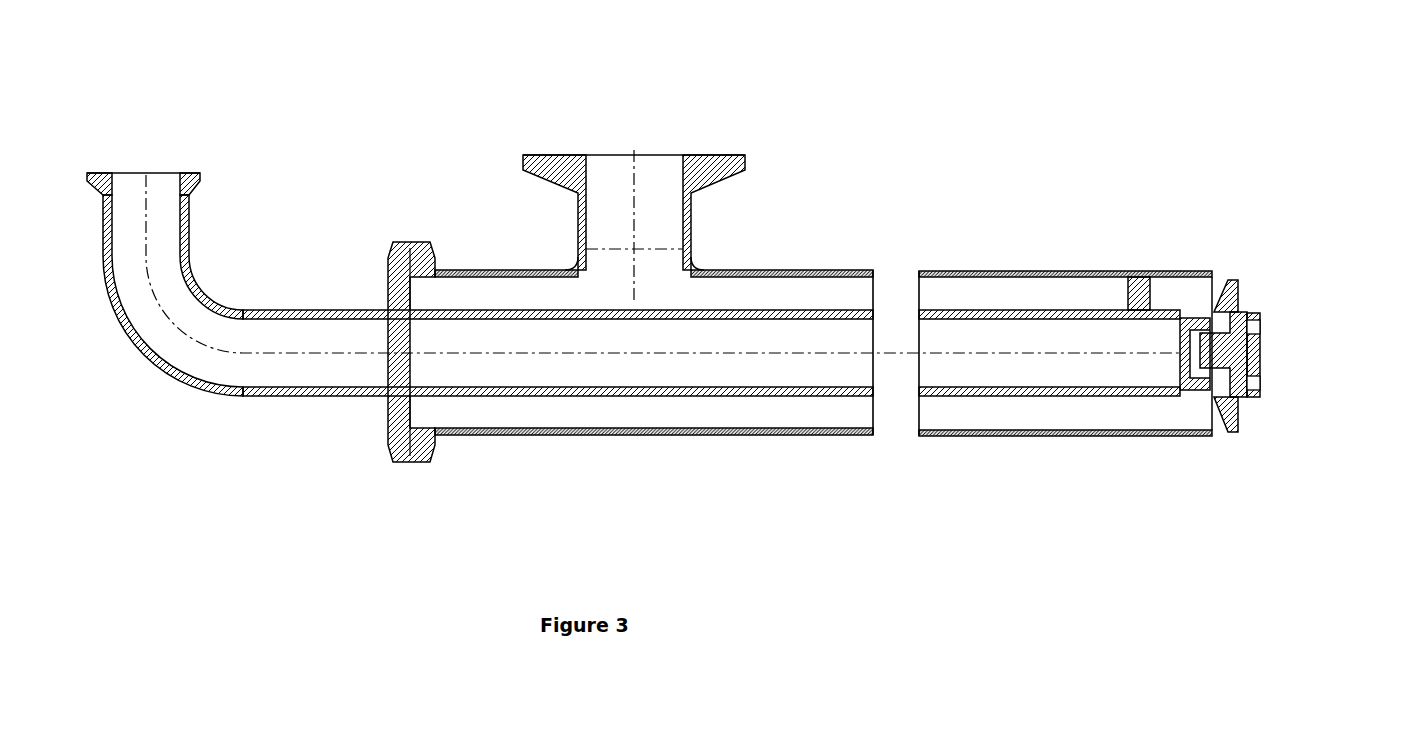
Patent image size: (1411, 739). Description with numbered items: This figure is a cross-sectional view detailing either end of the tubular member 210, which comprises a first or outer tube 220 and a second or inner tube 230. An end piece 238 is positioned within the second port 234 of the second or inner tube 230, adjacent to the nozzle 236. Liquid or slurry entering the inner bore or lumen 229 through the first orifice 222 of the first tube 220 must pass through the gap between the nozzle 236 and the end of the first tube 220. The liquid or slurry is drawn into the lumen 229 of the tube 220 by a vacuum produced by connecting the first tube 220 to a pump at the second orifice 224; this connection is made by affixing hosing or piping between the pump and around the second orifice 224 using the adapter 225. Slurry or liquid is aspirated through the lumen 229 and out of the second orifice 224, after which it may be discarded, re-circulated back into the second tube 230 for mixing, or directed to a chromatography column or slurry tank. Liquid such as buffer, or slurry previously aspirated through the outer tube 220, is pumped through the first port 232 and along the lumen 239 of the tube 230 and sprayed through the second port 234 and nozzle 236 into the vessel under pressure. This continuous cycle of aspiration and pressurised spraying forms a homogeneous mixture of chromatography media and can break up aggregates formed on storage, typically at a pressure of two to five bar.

The tubular member 210 is at (797, 453).
The first or outer tube 220 is at (820, 252).
The first orifice 222 is at (1213, 290).
The second orifice 224 is at (640, 165).
The adapter 225 is at (556, 155).
The lumen 229 is at (935, 292).
The second or inner tube 230 is at (196, 227).
The first port 232 is at (131, 182).
The second port 234 is at (1168, 378).
The nozzle 236 is at (1232, 280).
The end piece 238 is at (1262, 357).
The lumen 239 is at (198, 350).